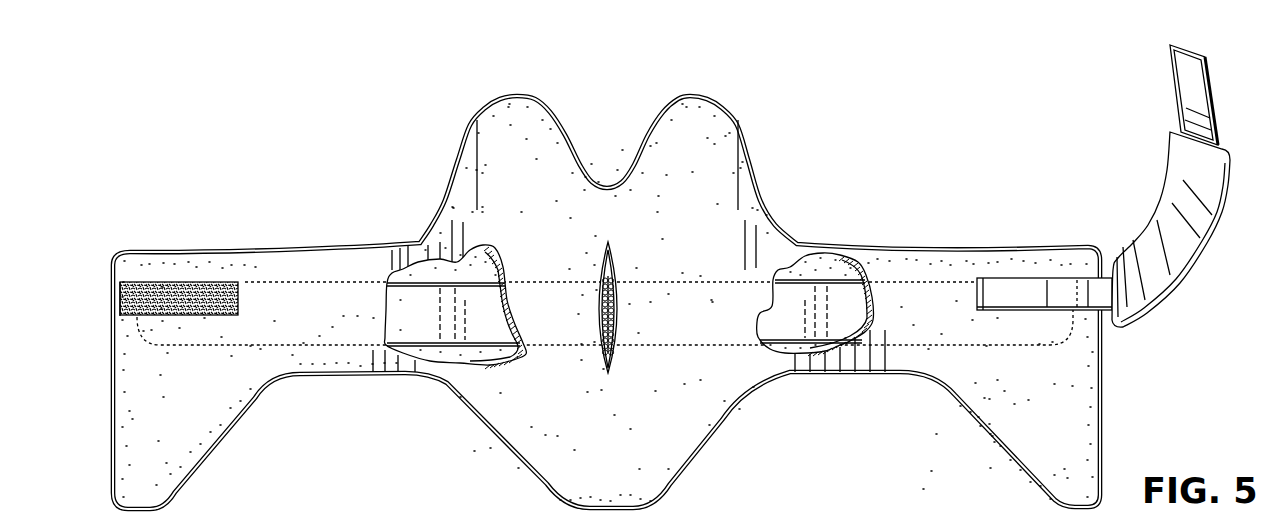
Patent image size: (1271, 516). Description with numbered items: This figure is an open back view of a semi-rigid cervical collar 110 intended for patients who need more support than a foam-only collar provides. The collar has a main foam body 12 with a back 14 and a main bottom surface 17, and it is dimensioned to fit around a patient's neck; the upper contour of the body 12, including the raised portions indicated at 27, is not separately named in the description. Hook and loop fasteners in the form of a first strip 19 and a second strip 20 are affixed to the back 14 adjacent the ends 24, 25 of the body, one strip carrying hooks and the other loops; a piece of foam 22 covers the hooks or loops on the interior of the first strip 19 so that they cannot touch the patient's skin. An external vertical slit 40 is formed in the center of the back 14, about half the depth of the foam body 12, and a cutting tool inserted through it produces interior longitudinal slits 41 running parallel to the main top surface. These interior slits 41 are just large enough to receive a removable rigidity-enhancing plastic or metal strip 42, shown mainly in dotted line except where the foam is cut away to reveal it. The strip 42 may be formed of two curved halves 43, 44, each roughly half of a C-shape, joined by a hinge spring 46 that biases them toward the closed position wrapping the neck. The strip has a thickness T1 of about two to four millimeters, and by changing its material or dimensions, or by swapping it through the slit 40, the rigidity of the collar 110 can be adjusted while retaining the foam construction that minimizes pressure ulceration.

The collar 110 is at (428, 132).
The shoulder straps 27 is at (567, 102).
The foam body 12 is at (898, 358).
The back 14 is at (283, 357).
The main bottom surface 17 is at (850, 370).
The end 24 is at (112, 370).
The end 25 is at (1102, 408).
The second strip 20 is at (143, 282).
The first strip 19 is at (1187, 88).
The piece of foam 22 is at (1167, 212).
The external vertical slit 40 is at (613, 255).
The hinge spring 46 is at (610, 317).
The interior longitudinal slits 41 is at (388, 283).
The rigidity-enhancing strip 42 is at (604, 290).
The curved half 43 is at (412, 310).
The curved half 44 is at (805, 310).
The thickness T1 is at (562, 455).